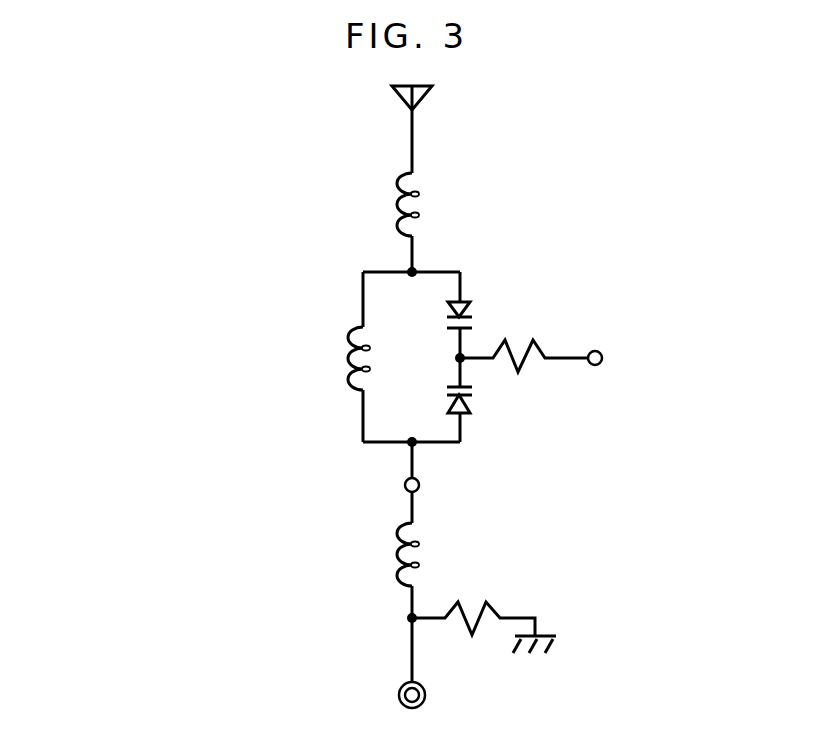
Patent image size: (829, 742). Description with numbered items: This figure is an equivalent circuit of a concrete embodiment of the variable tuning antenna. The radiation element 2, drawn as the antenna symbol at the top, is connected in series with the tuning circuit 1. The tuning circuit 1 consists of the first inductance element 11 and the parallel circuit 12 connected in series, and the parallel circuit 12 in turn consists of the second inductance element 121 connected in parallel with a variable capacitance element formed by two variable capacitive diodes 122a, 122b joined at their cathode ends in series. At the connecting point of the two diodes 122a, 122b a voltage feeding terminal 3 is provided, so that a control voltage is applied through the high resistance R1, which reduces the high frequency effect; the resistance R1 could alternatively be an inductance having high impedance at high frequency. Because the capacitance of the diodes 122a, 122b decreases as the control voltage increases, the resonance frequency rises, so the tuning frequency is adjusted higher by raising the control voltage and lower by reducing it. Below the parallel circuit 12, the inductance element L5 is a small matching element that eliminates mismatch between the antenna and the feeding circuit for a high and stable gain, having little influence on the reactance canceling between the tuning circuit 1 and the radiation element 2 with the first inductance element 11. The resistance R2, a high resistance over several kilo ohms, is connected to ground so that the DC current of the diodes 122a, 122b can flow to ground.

The tuning circuit 1 is at (113, 225).
The radiation element 2 is at (400, 97).
The voltage feeding terminal 3 is at (603, 353).
The first inductance element 11 is at (397, 192).
The parallel circuit 12 is at (193, 353).
The second inductance element 121 is at (350, 359).
The variable capacitive diode 122a is at (455, 312).
The variable capacitive diode 122b is at (447, 392).
The resistance R1 is at (524, 337).
The resistance R2 is at (484, 610).
The inductance element L5 is at (385, 570).